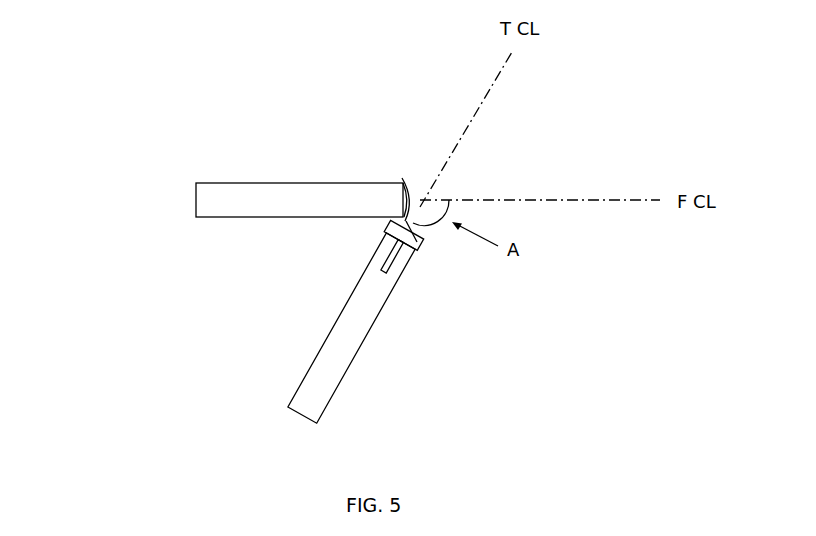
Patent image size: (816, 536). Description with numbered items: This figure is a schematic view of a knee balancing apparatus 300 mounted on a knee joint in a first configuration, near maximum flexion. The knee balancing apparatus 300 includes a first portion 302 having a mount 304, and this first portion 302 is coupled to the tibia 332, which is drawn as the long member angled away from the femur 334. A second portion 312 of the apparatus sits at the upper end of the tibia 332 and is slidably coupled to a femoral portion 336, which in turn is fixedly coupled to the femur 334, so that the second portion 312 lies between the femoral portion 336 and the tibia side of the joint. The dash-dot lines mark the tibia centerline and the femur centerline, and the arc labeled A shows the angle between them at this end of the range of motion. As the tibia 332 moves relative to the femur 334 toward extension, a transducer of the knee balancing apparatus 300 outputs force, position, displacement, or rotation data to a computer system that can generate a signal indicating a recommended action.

The knee balancing apparatus 300 is at (163, 137).
The femur 334 is at (308, 200).
The femoral portion 336 is at (403, 178).
The tibia 332 is at (365, 328).
The second portion 312 is at (416, 238).
The mount 304 is at (392, 260).
The first portion 302 is at (416, 246).